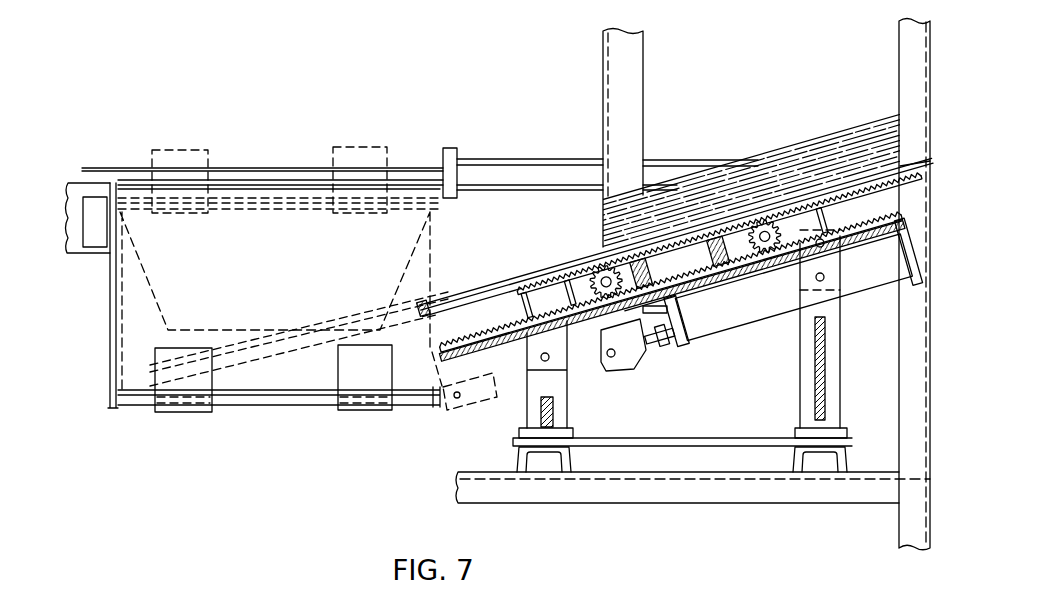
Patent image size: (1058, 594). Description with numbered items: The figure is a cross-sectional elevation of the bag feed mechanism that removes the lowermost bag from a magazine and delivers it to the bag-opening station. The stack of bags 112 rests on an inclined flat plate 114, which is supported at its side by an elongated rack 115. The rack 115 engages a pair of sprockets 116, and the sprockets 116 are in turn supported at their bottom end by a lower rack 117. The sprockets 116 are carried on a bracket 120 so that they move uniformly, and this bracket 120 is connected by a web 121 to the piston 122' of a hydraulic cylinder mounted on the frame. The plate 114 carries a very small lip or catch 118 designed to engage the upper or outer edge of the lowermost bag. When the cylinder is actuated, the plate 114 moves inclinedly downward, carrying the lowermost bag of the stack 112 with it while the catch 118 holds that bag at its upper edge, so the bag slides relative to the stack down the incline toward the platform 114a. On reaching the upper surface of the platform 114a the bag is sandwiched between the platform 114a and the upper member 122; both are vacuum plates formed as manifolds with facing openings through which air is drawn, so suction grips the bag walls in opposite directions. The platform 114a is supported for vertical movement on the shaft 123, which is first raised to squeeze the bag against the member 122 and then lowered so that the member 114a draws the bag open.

The stack of bags 112 is at (801, 148).
The inclined flat plate 114 is at (858, 180).
The platform 114a is at (266, 404).
The elongated rack 115 is at (719, 255).
The sprockets 116 is at (603, 272).
The lower rack 117 is at (744, 268).
The lip or catch 118 is at (915, 162).
The bracket 120 is at (681, 262).
The web 121 is at (614, 330).
The upper member 122 is at (420, 169).
The piston 122' is at (675, 350).
The shaft 123 is at (720, 326).